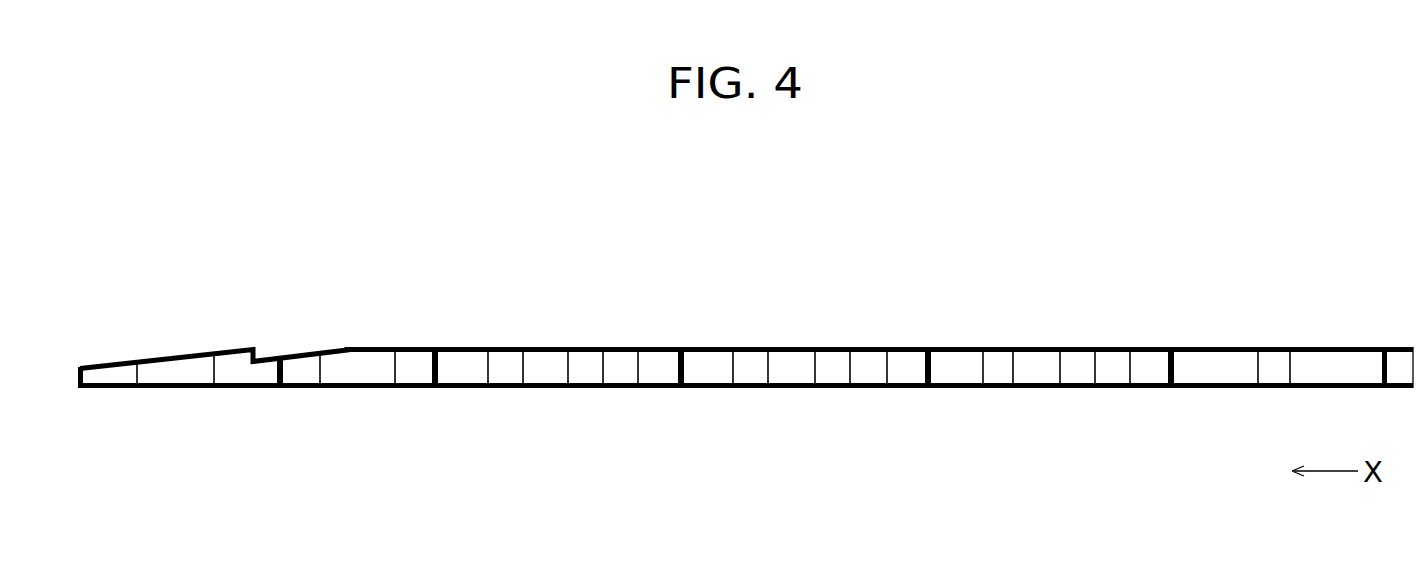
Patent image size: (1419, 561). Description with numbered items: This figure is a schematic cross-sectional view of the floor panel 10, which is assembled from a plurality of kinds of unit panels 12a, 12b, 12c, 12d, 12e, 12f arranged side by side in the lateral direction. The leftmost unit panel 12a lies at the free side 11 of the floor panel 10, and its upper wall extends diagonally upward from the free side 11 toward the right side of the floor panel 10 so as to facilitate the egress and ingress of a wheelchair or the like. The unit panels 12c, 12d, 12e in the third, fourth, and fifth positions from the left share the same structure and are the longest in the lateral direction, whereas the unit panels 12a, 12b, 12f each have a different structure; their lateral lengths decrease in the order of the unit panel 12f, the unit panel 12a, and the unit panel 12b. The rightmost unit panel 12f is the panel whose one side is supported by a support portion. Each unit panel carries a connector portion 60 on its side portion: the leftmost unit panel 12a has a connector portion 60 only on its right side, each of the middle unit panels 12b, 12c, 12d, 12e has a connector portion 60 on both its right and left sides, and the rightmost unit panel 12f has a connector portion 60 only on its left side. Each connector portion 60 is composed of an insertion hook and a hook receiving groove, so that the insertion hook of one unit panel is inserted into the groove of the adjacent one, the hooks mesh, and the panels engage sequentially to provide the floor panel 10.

The floor panel 10 is at (1262, 312).
The free side 11 is at (78, 385).
The unit panel 12a is at (196, 372).
The unit panel 12b is at (372, 372).
The unit panel 12c is at (552, 372).
The unit panel 12d is at (788, 370).
The unit panel 12e is at (1042, 370).
The unit panel 12f is at (1282, 372).
The connector portion 60 is at (278, 340).